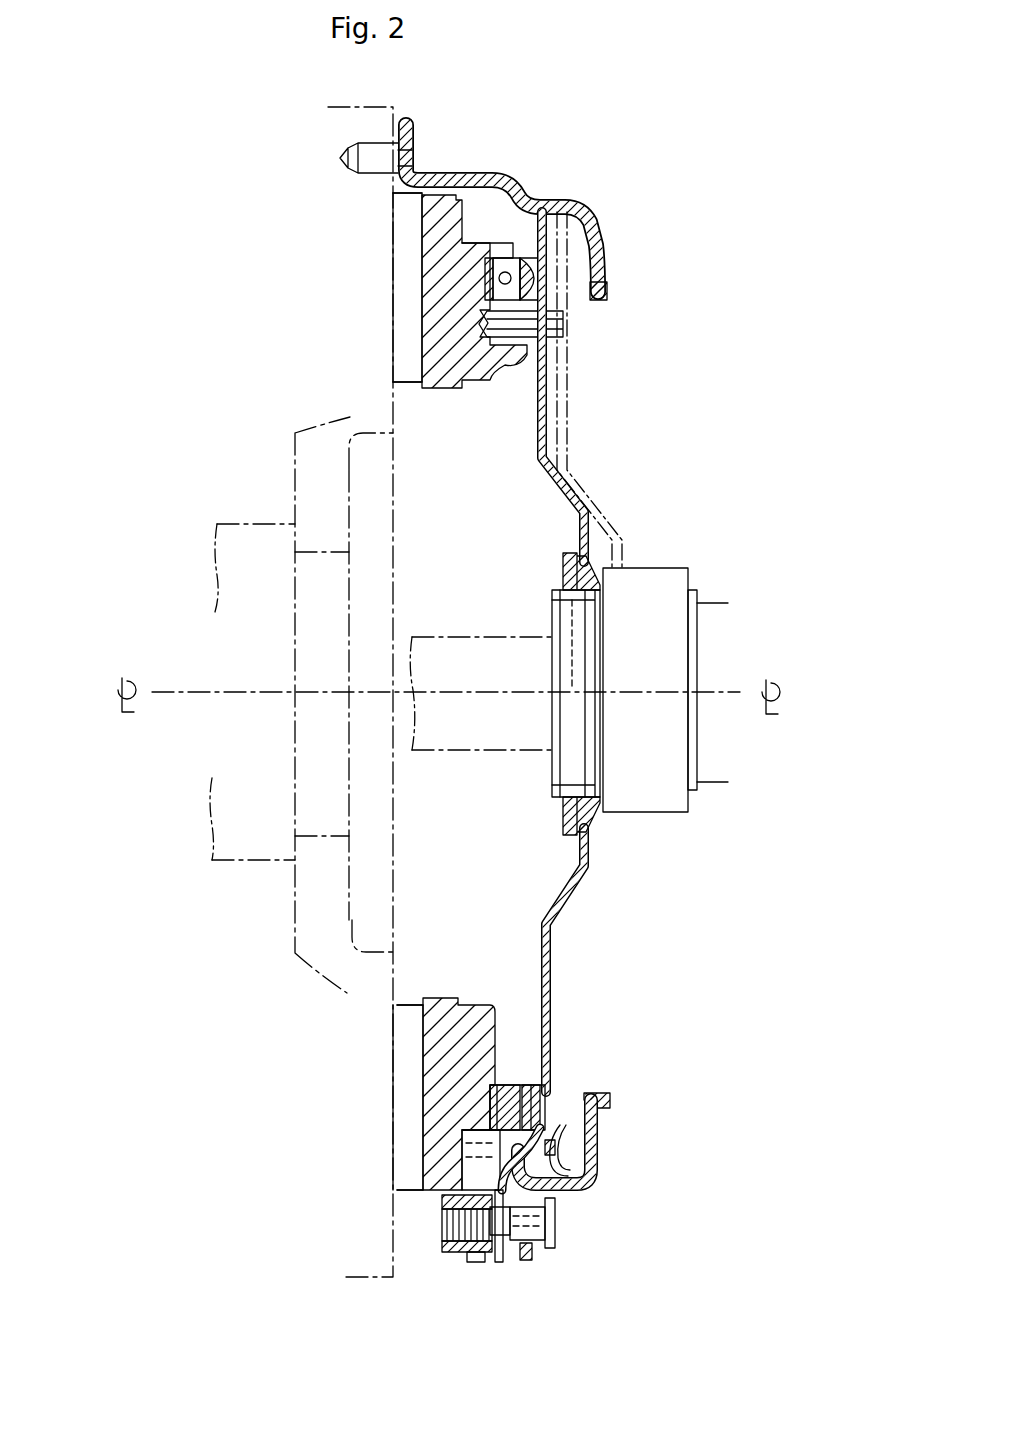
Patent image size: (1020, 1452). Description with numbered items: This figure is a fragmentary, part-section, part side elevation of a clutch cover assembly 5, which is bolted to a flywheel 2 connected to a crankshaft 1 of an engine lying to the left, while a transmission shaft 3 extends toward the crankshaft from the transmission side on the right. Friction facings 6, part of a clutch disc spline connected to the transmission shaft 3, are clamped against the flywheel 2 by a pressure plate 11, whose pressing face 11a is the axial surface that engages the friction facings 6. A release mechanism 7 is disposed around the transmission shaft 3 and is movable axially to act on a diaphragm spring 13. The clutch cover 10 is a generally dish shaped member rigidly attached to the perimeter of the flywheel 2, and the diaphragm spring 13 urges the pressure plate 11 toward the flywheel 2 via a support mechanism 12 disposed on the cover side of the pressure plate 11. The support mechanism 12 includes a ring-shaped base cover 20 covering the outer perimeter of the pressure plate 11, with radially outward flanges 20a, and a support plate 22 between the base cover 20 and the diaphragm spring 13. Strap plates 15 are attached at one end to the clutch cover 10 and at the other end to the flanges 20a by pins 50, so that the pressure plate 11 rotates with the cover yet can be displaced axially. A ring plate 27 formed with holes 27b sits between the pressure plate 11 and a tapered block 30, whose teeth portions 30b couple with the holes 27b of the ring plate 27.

The crankshaft 1 is at (241, 542).
The flywheel 2 is at (340, 113).
The transmission shaft 3 is at (478, 652).
The clutch cover assembly 5 is at (578, 166).
The friction facings 6 is at (396, 250).
The release mechanism 7 is at (640, 592).
The clutch cover 10 is at (603, 1092).
The pressure plate 11 is at (446, 392).
The pressing face 11a is at (420, 301).
The support mechanism 12 is at (519, 1083).
The diaphragm spring 13 is at (548, 942).
The strap plates 15 is at (497, 1252).
The base cover 20 is at (530, 1088).
The flanges 20a is at (492, 1250).
The support plate 22 is at (562, 1152).
The ring plate 27 is at (490, 1093).
The holes 27b is at (490, 1112).
The tapered block 30 is at (507, 1085).
The teeth portions 30b is at (541, 1123).
The pins 50 is at (553, 1227).